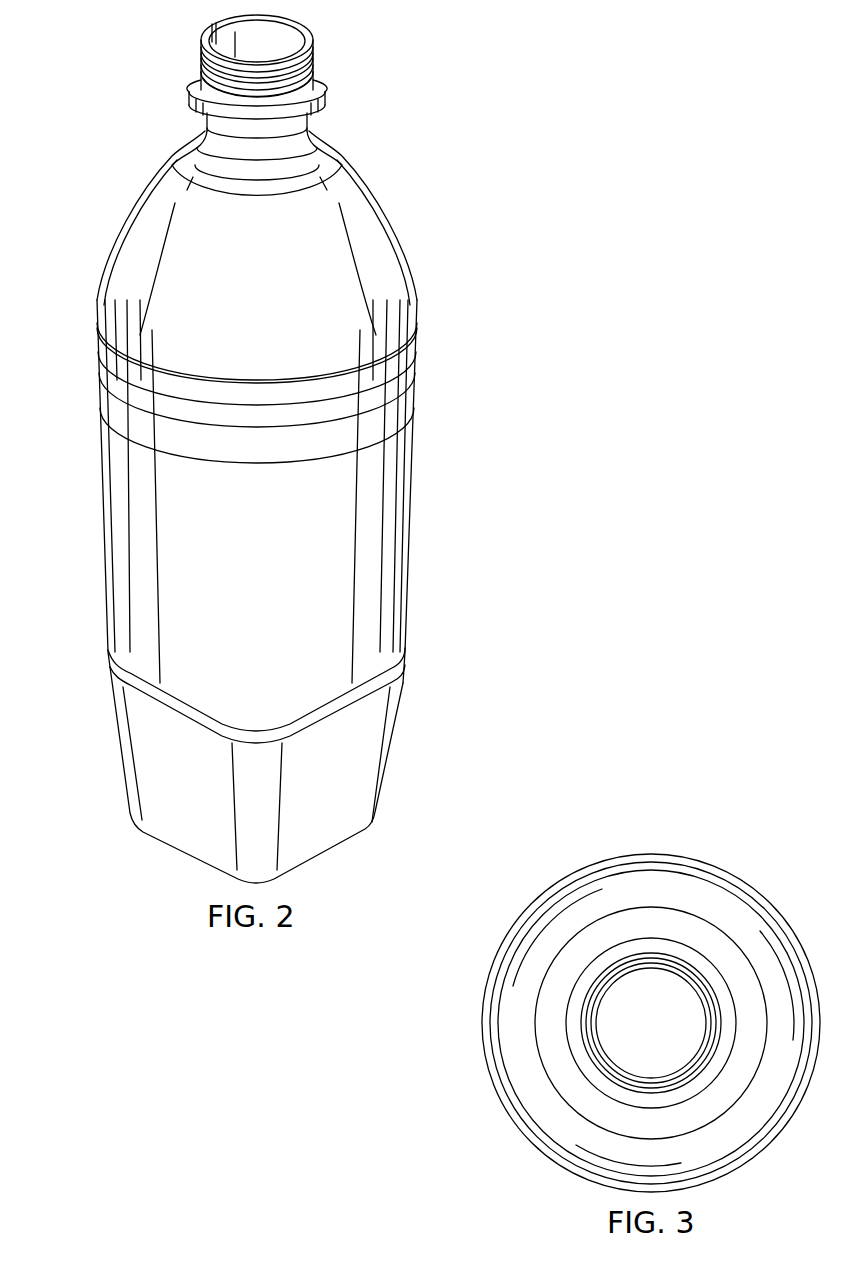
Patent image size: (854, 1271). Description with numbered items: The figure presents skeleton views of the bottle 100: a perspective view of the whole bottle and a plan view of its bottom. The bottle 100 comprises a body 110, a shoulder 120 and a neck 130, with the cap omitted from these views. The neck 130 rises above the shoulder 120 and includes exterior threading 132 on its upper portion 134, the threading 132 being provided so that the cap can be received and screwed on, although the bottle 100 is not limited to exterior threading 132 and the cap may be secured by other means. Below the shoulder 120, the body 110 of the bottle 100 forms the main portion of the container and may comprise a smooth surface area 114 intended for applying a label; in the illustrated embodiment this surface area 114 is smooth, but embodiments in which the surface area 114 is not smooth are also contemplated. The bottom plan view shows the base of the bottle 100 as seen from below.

In FIG. 2, the bottle 100 is at (472, 157).
In FIG. 2, the body 110 is at (432, 291).
In FIG. 2, the smooth surface area 114 is at (104, 522).
In FIG. 2, the shoulder 120 is at (110, 222).
In FIG. 2, the neck 130 is at (340, 103).
In FIG. 2, the exterior threading 132 is at (315, 55).
In FIG. 2, the upper portion 134 is at (207, 130).
In FIG. 3, the upper portion 134 is at (697, 970).